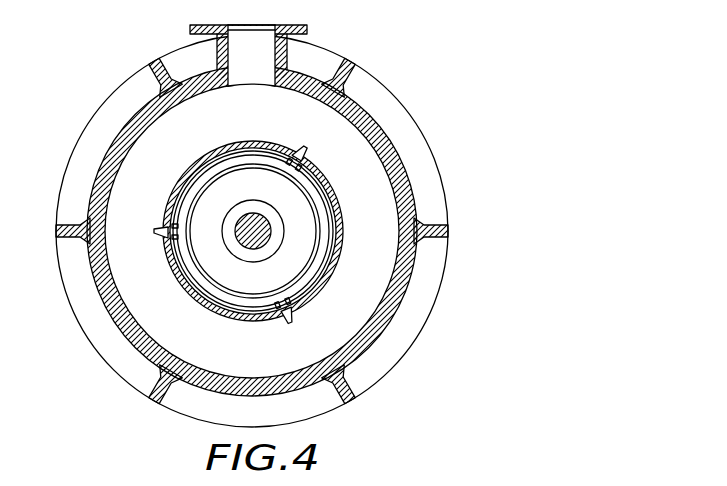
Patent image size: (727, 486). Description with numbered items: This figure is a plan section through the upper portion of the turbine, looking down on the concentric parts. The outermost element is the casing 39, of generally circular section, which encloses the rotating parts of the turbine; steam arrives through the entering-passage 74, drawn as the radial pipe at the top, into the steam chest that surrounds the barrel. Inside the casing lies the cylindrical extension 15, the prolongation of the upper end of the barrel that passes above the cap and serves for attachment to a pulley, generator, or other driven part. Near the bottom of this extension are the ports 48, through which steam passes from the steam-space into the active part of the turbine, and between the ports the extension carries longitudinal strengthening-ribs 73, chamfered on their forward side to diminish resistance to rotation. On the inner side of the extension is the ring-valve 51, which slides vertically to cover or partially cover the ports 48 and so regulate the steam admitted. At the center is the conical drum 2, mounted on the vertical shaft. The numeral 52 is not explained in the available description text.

The conical drum 2 is at (238, 240).
The cylindrical extension 15 is at (327, 183).
The casing 39 is at (372, 118).
The ports 48 is at (215, 148).
The ring-valve 51 is at (171, 207).
The inner ring 52 is at (161, 267).
The longitudinal strengthening-ribs 73 is at (303, 147).
The entering-passage 74 is at (283, 55).